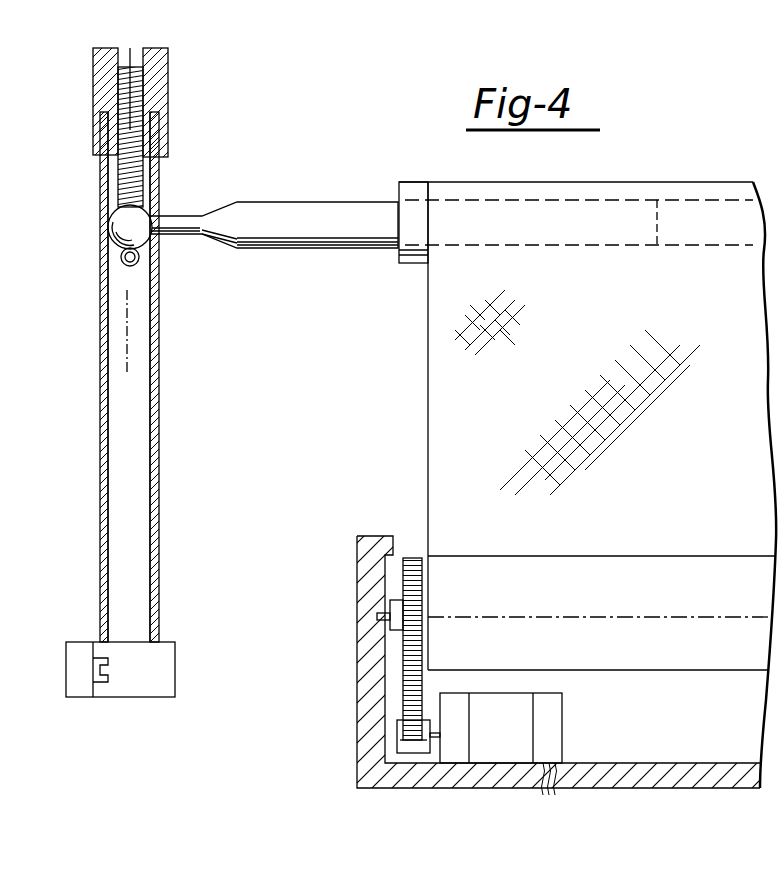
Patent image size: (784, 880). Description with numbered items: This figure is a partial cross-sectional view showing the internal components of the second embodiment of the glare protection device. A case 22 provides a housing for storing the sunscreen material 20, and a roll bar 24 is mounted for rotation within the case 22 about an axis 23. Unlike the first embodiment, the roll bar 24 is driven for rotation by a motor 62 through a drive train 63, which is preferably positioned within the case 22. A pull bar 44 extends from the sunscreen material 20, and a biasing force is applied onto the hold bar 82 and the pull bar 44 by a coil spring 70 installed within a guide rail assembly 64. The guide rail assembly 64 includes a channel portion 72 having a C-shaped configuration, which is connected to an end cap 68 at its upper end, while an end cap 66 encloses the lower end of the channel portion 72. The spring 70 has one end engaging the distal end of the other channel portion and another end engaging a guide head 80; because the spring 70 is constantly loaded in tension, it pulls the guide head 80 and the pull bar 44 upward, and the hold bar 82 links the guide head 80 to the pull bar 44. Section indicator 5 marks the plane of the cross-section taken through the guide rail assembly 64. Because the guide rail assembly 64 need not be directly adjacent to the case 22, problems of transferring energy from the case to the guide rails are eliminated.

The section line 5- 5 is at (140, 58).
The sunscreen material 20 is at (452, 378).
The case 22 is at (357, 682).
The axis 23 is at (712, 612).
The roll bar 24 is at (656, 515).
The pull bar 44 is at (695, 147).
The motor 62 is at (523, 731).
The drive train 63 is at (411, 558).
The guide rail assembly 64 is at (98, 423).
The end cap 66 is at (75, 669).
The end cap 68 is at (162, 97).
The coil spring 70 is at (137, 188).
The channel portion 72 is at (100, 360).
The guide head 80 is at (108, 233).
The hold bar 82 is at (352, 168).